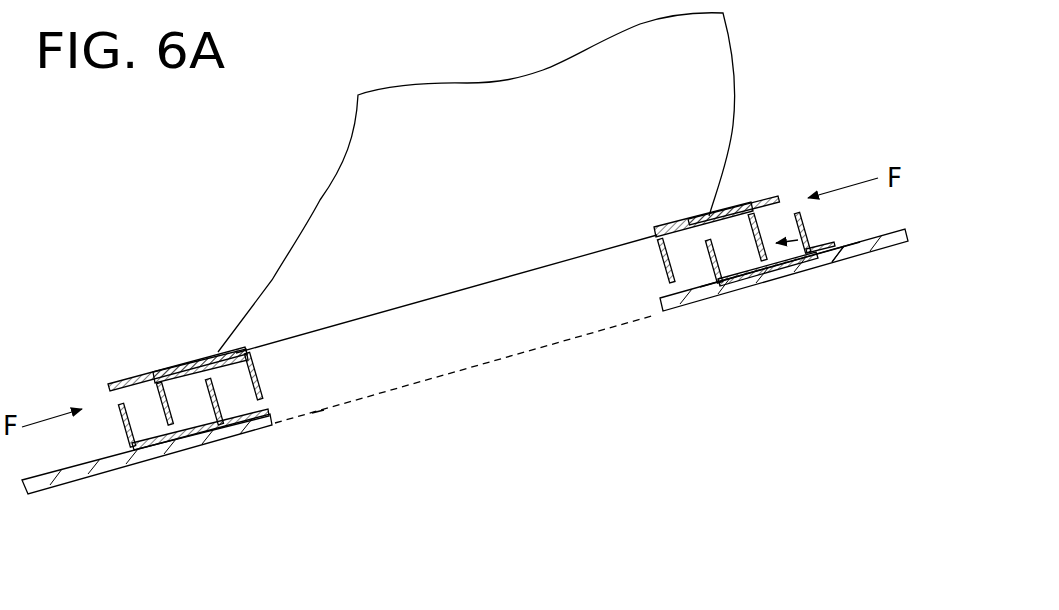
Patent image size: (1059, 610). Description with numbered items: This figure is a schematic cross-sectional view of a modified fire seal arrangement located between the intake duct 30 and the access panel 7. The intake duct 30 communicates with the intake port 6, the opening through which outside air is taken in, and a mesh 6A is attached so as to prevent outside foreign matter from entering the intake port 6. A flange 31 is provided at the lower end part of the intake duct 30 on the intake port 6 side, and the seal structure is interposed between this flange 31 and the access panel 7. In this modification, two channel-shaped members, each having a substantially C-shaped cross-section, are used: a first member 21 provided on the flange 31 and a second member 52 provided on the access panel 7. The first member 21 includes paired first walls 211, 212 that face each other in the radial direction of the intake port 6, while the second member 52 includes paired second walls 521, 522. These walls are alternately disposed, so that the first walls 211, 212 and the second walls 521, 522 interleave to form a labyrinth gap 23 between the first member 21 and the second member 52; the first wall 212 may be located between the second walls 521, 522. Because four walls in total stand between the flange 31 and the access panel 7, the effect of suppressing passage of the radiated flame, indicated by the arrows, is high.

The intake duct 30 is at (733, 44).
The flange 31 is at (742, 206).
The first member 21 is at (661, 262).
The first wall 211 is at (760, 221).
The first wall 212 is at (705, 264).
The labyrinth gap 23 is at (808, 241).
The second member 52 is at (840, 248).
The second wall 521 is at (780, 258).
The second wall 522 is at (720, 286).
The access panel 7 is at (835, 263).
The intake port 6 is at (314, 424).
The mesh 6A is at (462, 371).